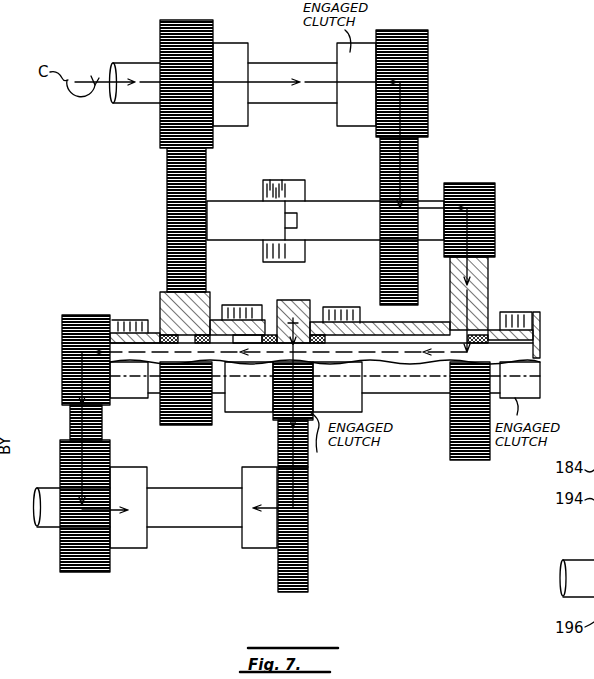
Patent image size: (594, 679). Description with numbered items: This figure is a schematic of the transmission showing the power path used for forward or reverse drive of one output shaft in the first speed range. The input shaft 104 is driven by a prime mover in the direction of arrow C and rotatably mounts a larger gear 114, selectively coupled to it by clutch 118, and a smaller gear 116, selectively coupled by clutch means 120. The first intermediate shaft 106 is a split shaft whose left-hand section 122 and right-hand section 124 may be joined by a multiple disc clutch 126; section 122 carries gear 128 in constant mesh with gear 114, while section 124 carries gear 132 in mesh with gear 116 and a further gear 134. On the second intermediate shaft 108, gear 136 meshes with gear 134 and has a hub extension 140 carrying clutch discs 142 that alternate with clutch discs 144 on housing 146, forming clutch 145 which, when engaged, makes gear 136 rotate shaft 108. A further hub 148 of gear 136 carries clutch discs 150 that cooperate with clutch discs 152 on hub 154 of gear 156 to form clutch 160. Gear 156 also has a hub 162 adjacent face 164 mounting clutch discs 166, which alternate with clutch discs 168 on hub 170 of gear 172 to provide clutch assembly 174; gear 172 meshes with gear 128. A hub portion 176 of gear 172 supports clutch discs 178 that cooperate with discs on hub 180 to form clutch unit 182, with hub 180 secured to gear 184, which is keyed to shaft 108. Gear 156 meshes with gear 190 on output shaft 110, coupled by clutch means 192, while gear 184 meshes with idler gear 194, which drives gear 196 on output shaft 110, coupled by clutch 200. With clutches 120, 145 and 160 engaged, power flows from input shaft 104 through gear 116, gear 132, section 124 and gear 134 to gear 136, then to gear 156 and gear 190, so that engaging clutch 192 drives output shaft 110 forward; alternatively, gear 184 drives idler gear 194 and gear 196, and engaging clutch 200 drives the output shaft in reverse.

The input shaft 104 is at (290, 54).
The first intermediate shaft 106 is at (307, 199).
The second intermediate shaft 108 is at (82, 350).
The output shaft 110 is at (203, 516).
The gear 114 is at (158, 130).
The gear 116 is at (428, 60).
The clutch 118 is at (238, 118).
The clutch means 120 is at (360, 128).
The left-hand section 122 is at (249, 235).
The right-hand section 124 is at (355, 235).
The multiple disc clutch 126 is at (295, 168).
The gear 128 is at (165, 218).
The gear 132 is at (420, 170).
The gear 134 is at (497, 208).
The gear 136 is at (470, 460).
The hub extension 140 is at (490, 320).
The clutch discs 142 is at (540, 322).
The clutch discs 144 is at (517, 312).
The clutch 145 is at (549, 306).
The housing 146 is at (525, 382).
The hub 148 is at (425, 395).
The clutch discs 150 is at (350, 320).
The clutch discs 152 is at (332, 290).
The hub 154 is at (352, 397).
The gear 156 is at (310, 425).
The clutch 160 is at (323, 299).
The hub 162 is at (240, 412).
The face 164 is at (262, 397).
The clutch discs 166 is at (218, 300).
The clutch discs 168 is at (238, 333).
The hub 170 is at (163, 312).
The gear 172 is at (180, 425).
The multiple disc clutch assembly 174 is at (256, 299).
The hub portion 176 is at (170, 318).
The clutch discs 178 is at (95, 315).
The hub 180 is at (125, 318).
The clutch unit 182 is at (130, 388).
The gear 184 is at (62, 375).
The gear 190 is at (308, 582).
The multiple disc clutch means 192 is at (258, 545).
The idler gear 194 is at (70, 428).
The gear 196 is at (95, 572).
The clutch 200 is at (125, 538).